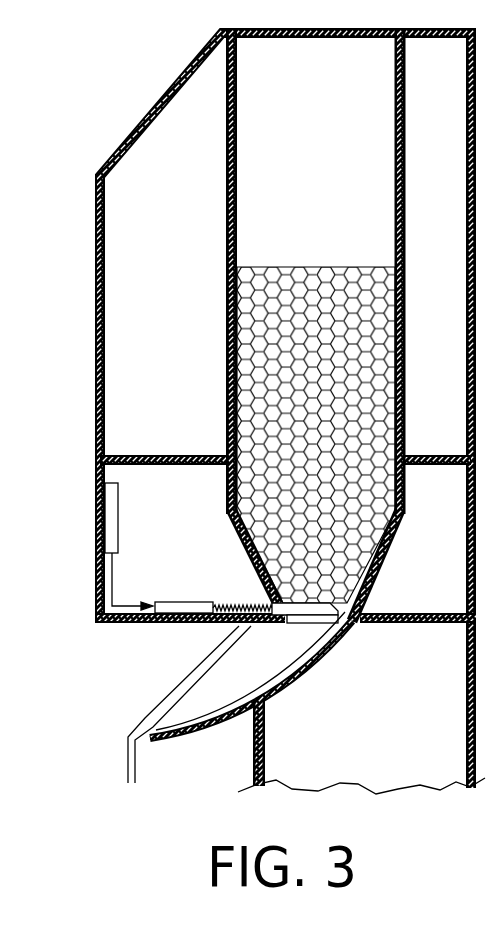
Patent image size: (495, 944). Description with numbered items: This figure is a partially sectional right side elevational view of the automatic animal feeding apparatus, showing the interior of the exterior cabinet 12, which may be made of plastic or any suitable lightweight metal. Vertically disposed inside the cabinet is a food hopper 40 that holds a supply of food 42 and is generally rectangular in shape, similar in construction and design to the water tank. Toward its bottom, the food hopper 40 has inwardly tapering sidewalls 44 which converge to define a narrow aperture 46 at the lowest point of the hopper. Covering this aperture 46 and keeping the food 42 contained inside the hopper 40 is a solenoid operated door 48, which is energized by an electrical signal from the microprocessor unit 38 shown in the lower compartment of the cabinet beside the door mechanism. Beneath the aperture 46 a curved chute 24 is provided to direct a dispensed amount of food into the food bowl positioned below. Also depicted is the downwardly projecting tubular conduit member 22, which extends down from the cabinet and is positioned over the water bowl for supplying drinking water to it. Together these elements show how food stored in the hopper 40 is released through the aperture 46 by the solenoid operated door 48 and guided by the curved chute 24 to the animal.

The exterior cabinet 12 is at (95, 258).
The food hopper 40 is at (226, 183).
The food 42 is at (258, 372).
The microprocessor unit 38 is at (118, 518).
The inwardly tapering sidewalls 44 is at (240, 557).
The solenoid operated door 48 is at (230, 597).
The aperture 46 is at (316, 626).
The curved chute 24 is at (186, 722).
The tubular conduit member 22 is at (140, 722).